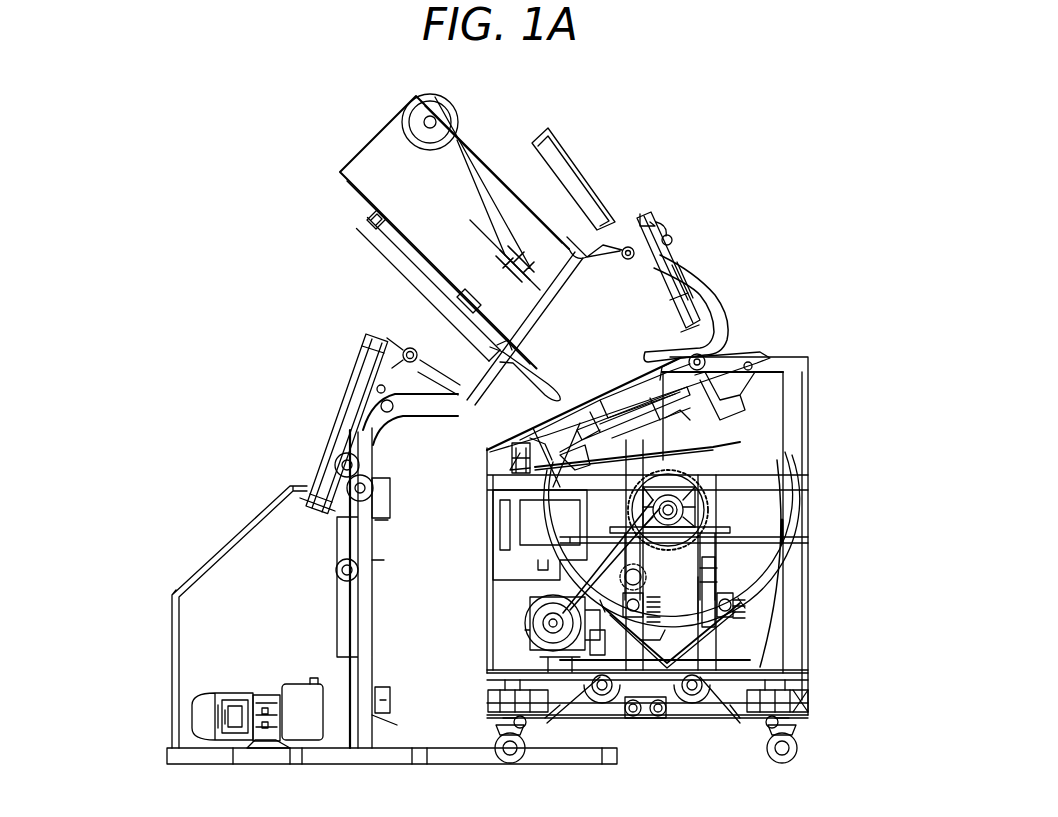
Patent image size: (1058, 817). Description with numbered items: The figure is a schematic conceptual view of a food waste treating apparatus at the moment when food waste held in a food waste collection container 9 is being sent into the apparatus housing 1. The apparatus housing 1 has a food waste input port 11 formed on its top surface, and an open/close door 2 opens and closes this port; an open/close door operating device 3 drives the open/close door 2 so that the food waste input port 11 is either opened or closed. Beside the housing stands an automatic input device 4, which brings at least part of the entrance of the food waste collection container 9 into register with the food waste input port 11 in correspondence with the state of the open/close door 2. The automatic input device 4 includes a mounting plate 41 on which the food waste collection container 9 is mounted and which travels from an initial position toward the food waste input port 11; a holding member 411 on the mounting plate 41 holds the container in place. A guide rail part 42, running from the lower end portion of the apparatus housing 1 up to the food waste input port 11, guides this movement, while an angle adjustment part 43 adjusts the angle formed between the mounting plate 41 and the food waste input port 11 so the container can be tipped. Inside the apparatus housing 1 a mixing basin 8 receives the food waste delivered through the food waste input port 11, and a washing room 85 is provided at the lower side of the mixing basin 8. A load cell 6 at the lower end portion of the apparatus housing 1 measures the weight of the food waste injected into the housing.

The apparatus housing 1 is at (814, 544).
The open/close door 2 is at (668, 252).
The open/close door operating device 3 is at (735, 340).
The automatic input device 4 is at (392, 625).
The load cell 6 is at (817, 697).
The mixing basin 8 is at (725, 456).
The food waste collection container 9 is at (505, 200).
The food waste input port 11 is at (700, 358).
The mounting plate 41 is at (356, 244).
The guide rail part 42 is at (350, 541).
The angle adjustment part 43 is at (397, 328).
The washing room 85 is at (660, 640).
The holding member 411 is at (412, 172).